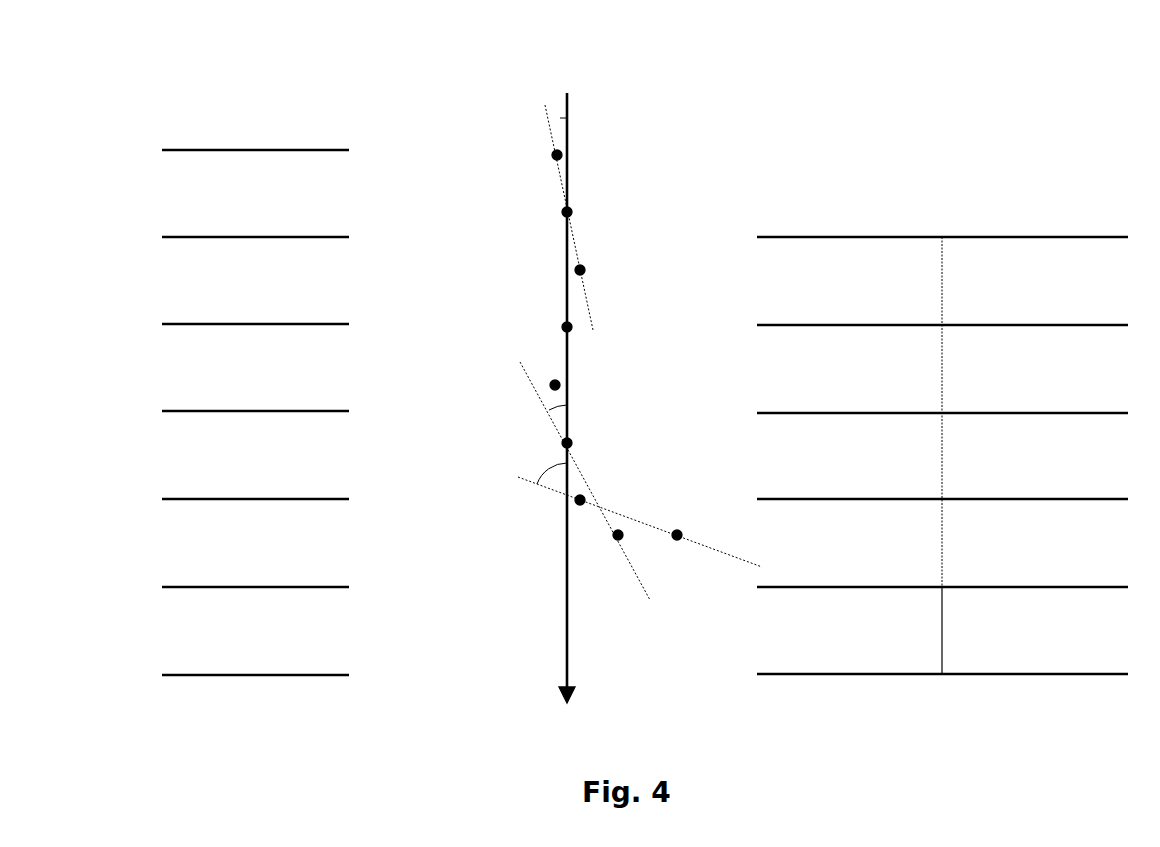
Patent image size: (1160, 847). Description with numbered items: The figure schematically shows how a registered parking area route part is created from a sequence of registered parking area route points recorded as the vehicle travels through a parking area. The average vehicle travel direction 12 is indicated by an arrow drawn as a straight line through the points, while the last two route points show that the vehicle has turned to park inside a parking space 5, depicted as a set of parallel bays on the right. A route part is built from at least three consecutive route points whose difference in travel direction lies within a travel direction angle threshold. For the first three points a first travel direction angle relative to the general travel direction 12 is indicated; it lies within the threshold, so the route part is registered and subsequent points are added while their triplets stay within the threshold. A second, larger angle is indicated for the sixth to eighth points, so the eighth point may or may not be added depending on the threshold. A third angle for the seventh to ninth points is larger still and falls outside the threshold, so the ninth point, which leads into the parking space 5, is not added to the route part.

The parking space 5 is at (863, 562).
The average vehicle travel direction 12 is at (565, 626).